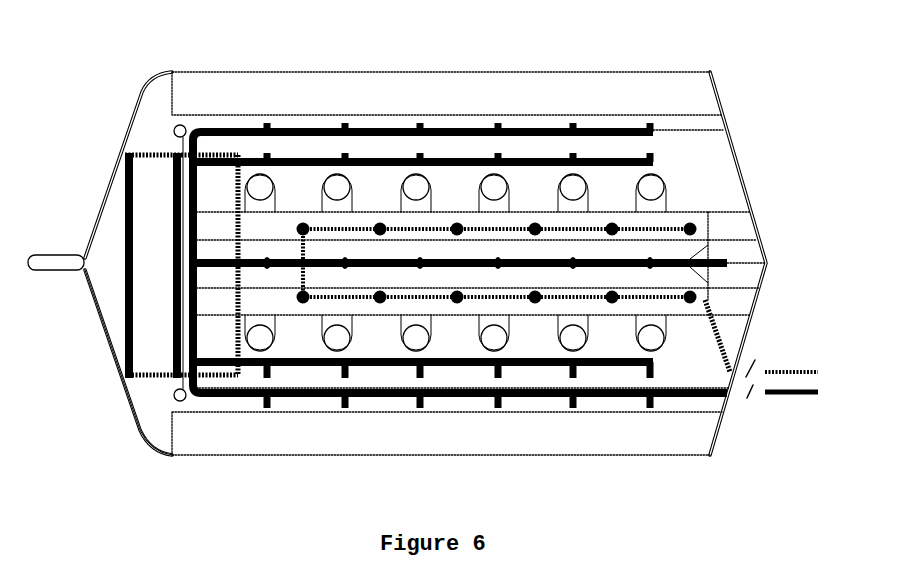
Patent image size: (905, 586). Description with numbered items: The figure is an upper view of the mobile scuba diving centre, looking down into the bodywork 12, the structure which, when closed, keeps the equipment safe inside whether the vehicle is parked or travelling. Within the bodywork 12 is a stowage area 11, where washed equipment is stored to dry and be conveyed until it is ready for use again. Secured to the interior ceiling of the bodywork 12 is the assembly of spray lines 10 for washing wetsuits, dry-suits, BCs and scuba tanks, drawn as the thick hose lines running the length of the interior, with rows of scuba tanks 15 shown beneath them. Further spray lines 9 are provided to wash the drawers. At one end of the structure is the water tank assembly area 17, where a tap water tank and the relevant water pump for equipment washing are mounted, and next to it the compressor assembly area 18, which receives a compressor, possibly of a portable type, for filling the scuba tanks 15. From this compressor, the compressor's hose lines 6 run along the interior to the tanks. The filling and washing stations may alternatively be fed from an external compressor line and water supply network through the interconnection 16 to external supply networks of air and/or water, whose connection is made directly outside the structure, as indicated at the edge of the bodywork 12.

The compressor's hose lines 6 is at (477, 305).
The spray lines to wash the drawers 9 is at (327, 395).
The spray lines to wash wetsuits, dry-suits, BCs and scuba tanks 10 is at (288, 128).
The stowage area 11 is at (155, 408).
The bodywork 12 is at (135, 103).
The scuba tank 15 is at (418, 183).
The interconnection to external supply networks of air and/or water 16 is at (748, 400).
The water tank assembly area 17 is at (125, 223).
The compressor assembly area 18 is at (235, 256).